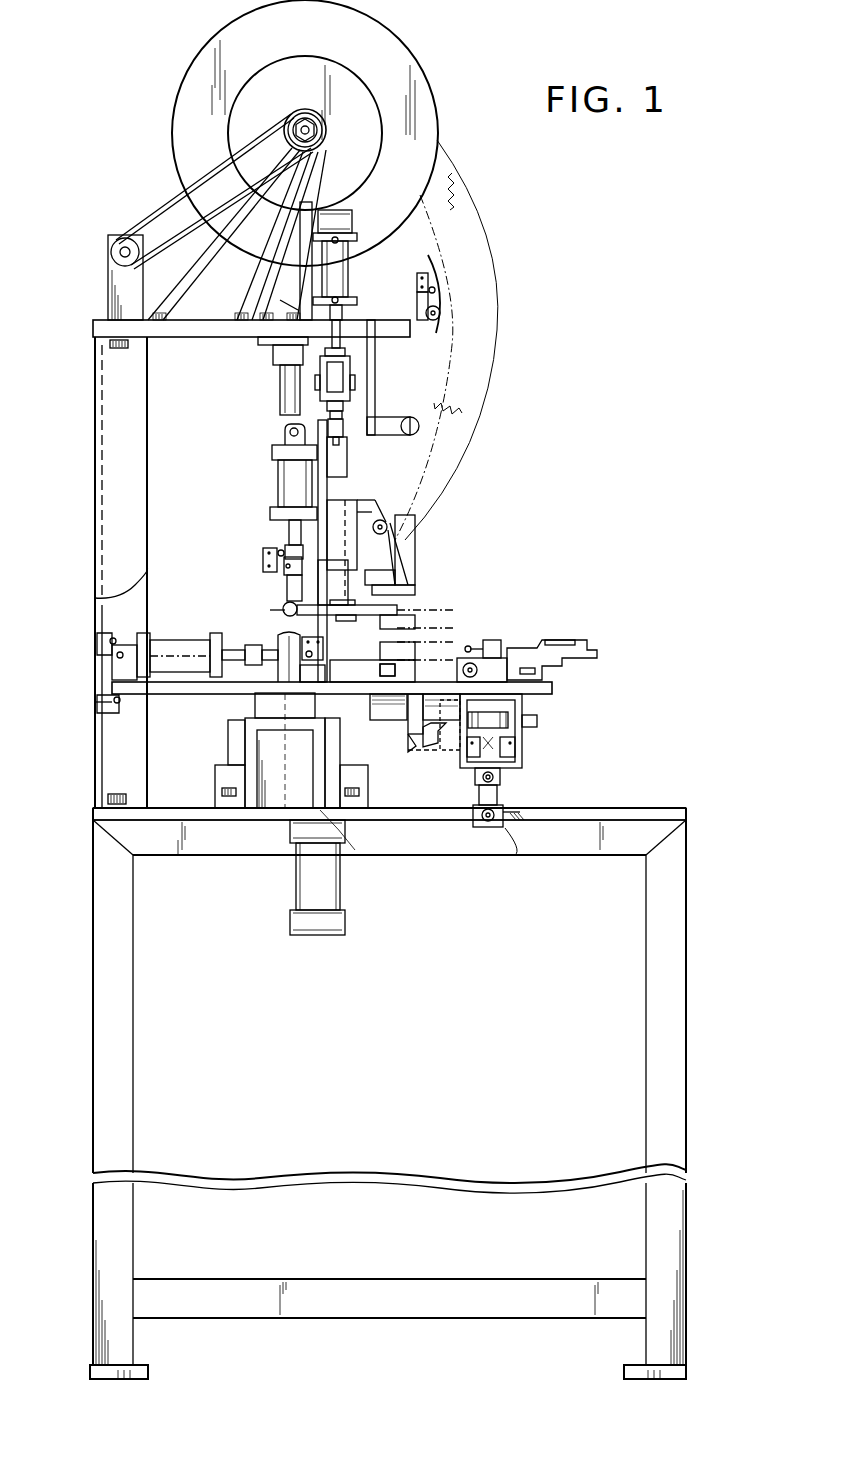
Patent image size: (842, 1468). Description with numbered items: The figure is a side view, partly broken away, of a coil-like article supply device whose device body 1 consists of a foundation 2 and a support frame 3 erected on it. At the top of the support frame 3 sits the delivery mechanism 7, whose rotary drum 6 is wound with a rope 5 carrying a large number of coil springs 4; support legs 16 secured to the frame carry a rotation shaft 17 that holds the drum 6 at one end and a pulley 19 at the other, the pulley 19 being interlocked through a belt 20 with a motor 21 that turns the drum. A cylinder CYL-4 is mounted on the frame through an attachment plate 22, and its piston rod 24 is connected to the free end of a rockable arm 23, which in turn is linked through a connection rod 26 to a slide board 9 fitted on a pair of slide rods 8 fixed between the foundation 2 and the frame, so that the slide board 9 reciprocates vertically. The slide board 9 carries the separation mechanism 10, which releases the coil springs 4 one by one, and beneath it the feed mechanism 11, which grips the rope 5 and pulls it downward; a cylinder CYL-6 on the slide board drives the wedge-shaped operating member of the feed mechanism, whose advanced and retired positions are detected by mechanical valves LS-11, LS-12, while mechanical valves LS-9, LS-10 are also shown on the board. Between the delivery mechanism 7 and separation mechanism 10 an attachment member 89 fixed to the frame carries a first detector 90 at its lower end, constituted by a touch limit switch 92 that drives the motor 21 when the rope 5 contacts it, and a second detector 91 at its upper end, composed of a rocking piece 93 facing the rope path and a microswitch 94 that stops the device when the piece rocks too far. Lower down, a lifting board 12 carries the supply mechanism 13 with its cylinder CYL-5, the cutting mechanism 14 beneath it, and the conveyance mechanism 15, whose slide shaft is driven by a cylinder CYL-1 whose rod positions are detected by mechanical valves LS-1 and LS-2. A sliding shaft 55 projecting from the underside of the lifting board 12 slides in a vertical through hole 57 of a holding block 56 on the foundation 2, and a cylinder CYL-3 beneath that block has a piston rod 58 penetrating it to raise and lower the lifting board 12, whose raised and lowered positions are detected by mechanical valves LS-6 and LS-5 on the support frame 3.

The device body 1 is at (688, 853).
The foundation 2 is at (652, 828).
The support frame 3 is at (108, 432).
The coil springs 4 is at (442, 208).
The rope 5 is at (450, 244).
The rotary drum 6 is at (424, 95).
The delivery mechanism 7 is at (437, 62).
The slide rods 8 is at (280, 386).
The slide board 9 is at (332, 492).
The separation mechanism 10 is at (440, 564).
The feed mechanism 11 is at (426, 611).
The lifting board 12 is at (540, 688).
The supply mechanism 13 is at (386, 676).
The cutting mechanism 14 is at (402, 690).
The conveyance mechanism 15 is at (563, 630).
The support legs 16 is at (200, 252).
The rotation shaft 17 is at (303, 120).
The pulley 19 is at (330, 113).
The belt 20 is at (282, 135).
The motor 21 is at (112, 240).
The attachment plate 22 is at (304, 289).
The rockable arm 23 is at (345, 368).
The piston rod 24 is at (352, 322).
The connection rod 26 is at (343, 425).
The sliding shaft 55 is at (226, 752).
The holding block 56 is at (216, 781).
The vertical through hole 57 is at (255, 790).
The piston rod 58 is at (330, 750).
The attachment member 89 is at (375, 340).
The first detector 90 is at (415, 430).
The second detector 91 is at (440, 300).
The touch limit switch 92 is at (406, 417).
The rocking piece 93 is at (430, 258).
The microswitch 94 is at (416, 284).
The cylinder CYL-1 is at (568, 806).
The cylinder CYL-3 is at (410, 893).
The cylinder CYL-4 is at (412, 218).
The cylinder CYL-5 is at (272, 613).
The cylinder CYL-6 is at (278, 488).
The mechanical valve LS-1 is at (450, 783).
The mechanical valve LS-2 is at (575, 764).
The mechanical valve LS-5 is at (200, 728).
The mechanical valve LS-6 is at (198, 626).
The limit switch 9 LS-9 is at (275, 637).
The limit switch 10 LS-10 is at (378, 651).
The mechanical valve LS-11 is at (263, 554).
The mechanical valve LS-12 is at (284, 576).